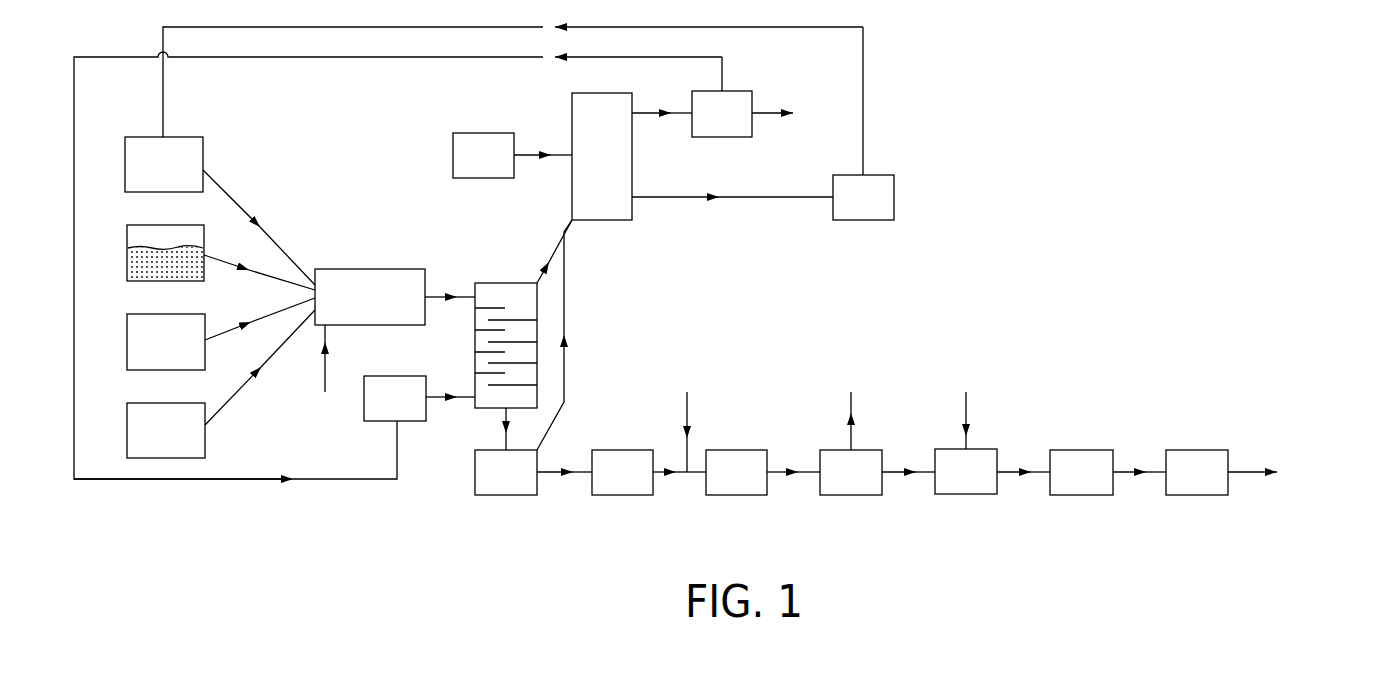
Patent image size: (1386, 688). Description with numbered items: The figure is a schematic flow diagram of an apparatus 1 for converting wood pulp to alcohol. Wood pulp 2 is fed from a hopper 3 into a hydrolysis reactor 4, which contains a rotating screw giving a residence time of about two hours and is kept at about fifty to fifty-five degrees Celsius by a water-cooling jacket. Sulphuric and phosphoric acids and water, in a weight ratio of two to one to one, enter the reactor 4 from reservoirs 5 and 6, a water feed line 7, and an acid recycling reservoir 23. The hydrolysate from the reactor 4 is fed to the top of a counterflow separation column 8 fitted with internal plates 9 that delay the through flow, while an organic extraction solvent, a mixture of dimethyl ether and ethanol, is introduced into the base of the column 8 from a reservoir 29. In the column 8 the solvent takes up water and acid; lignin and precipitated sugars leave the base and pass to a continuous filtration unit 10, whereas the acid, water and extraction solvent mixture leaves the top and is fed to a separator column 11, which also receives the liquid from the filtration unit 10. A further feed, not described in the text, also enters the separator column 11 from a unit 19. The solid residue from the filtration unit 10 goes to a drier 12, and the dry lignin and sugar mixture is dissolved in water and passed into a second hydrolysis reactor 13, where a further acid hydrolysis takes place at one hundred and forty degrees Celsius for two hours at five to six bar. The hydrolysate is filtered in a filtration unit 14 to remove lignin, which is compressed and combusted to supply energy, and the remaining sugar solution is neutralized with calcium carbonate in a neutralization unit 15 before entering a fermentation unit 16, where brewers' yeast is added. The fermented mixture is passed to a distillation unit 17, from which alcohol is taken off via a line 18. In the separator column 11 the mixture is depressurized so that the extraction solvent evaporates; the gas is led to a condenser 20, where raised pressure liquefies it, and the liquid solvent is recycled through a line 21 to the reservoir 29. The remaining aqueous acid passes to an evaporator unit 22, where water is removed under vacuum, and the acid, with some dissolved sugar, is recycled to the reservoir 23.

The apparatus 1 is at (963, 152).
The wood pulp 2 is at (127, 259).
The hopper 3 is at (127, 235).
The hydrolysis reactor 4 is at (372, 269).
The reservoir 5 is at (127, 339).
The reservoir 6 is at (127, 430).
The water feed line 7 is at (325, 370).
The counterflow separation column 8 is at (475, 345).
The internal plates 9 is at (517, 318).
The continuous filtration unit 10 is at (503, 495).
The separator column 11 is at (572, 101).
The drier 12 is at (618, 495).
The second hydrolysis reactor 13 is at (733, 495).
The filtration unit 14 is at (849, 495).
The neutralization unit 15 is at (964, 494).
The fermentation unit 16 is at (1079, 495).
The distillation unit 17 is at (1196, 495).
The line 18 is at (1242, 471).
The steam supply 19 is at (453, 155).
The condenser 20 is at (735, 91).
The line 21 is at (335, 57).
The evaporator unit 22 is at (862, 220).
The acid recycling reservoir 23 is at (203, 152).
The reservoir 29 is at (410, 421).